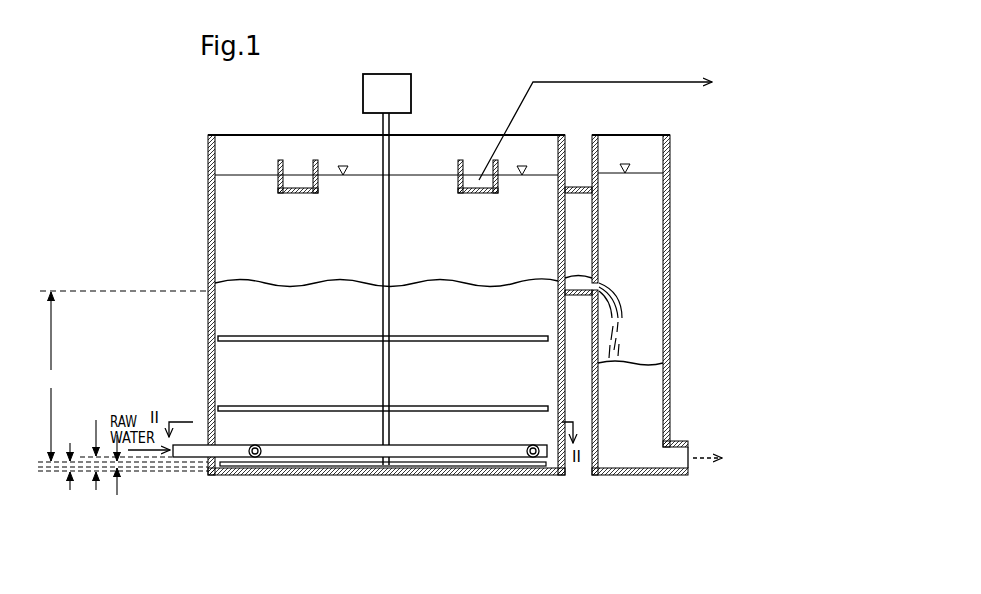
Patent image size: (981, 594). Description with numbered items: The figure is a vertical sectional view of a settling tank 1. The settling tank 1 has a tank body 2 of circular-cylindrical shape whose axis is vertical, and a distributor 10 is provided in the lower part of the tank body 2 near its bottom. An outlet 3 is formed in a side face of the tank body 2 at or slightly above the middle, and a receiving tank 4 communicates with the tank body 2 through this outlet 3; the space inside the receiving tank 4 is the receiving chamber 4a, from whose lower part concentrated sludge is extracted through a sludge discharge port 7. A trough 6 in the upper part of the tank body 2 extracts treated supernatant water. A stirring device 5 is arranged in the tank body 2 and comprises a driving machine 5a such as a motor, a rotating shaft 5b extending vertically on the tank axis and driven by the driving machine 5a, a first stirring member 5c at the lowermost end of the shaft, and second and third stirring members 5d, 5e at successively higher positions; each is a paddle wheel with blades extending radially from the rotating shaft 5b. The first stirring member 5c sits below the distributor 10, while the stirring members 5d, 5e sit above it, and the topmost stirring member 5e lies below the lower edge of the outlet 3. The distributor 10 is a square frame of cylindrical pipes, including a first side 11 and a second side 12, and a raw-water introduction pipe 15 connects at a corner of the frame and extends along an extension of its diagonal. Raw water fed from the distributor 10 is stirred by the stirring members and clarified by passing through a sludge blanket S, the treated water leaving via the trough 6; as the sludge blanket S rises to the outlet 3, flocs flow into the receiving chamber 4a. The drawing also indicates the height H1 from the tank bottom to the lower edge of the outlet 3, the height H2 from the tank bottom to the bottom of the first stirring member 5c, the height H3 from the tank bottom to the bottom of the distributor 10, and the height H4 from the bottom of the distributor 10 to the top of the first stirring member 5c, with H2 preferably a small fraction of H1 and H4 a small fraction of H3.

The settling tank 1 is at (170, 102).
The tank body 2 is at (208, 196).
The outlet 3 is at (582, 238).
The receiving tank 4 is at (672, 190).
The receiving chamber 4a is at (640, 306).
The stirring device 5 is at (444, 60).
The driving machine 5a is at (411, 92).
The rotating shaft 5b is at (392, 237).
The first stirring member 5c is at (491, 476).
The second stirring member 5d is at (453, 405).
The third stirring member 5e is at (472, 335).
The trough 6 is at (300, 195).
The sludge discharge port 7 is at (690, 453).
The distributor 10 is at (350, 452).
The first side 11 is at (310, 452).
The second side 12 is at (490, 452).
The raw-water introduction pipe 15 is at (183, 461).
The sludge blanket S is at (263, 293).
The height from the bottom surface of the tank body to the lower edge of the outlet H1 is at (124, 376).
The height from the bottom surface of the tank body to the bottom surface of the fir H2 is at (68, 454).
The height from the bottom surface of the tank body to the bottom surface of the dis H3 is at (94, 443).
The height from the bottom surface of the distributor to the top surface of the firs H4 is at (118, 477).